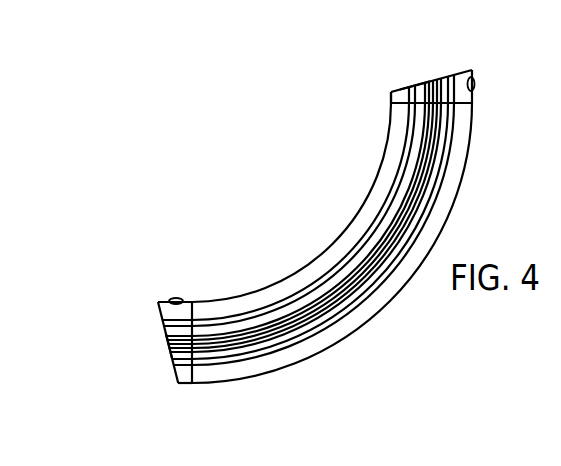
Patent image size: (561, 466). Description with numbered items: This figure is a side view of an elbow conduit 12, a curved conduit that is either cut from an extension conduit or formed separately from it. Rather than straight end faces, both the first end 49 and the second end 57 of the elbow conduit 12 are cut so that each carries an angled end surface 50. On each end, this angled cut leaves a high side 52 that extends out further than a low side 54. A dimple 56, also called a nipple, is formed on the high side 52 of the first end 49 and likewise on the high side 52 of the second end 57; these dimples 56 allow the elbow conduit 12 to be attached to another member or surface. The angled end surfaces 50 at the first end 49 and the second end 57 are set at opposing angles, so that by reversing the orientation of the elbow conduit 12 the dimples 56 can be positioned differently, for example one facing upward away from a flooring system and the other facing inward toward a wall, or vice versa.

The elbow conduit 12 is at (303, 178).
The first end 49 is at (165, 355).
The angled end surface 50 is at (437, 75).
The high side 52 is at (473, 103).
The low side 54 is at (390, 93).
The dimple 56 is at (474, 88).
The second end 57 is at (418, 73).